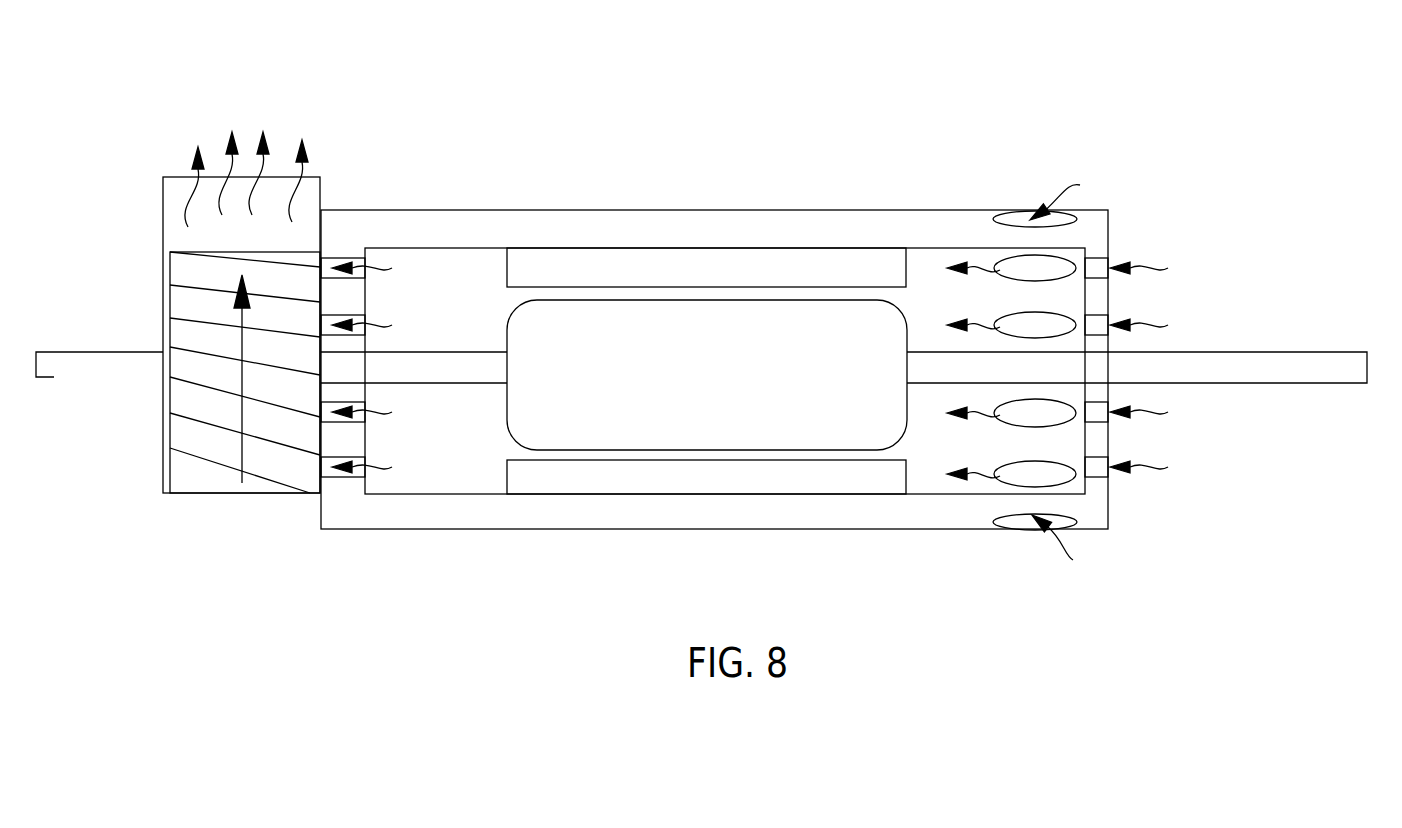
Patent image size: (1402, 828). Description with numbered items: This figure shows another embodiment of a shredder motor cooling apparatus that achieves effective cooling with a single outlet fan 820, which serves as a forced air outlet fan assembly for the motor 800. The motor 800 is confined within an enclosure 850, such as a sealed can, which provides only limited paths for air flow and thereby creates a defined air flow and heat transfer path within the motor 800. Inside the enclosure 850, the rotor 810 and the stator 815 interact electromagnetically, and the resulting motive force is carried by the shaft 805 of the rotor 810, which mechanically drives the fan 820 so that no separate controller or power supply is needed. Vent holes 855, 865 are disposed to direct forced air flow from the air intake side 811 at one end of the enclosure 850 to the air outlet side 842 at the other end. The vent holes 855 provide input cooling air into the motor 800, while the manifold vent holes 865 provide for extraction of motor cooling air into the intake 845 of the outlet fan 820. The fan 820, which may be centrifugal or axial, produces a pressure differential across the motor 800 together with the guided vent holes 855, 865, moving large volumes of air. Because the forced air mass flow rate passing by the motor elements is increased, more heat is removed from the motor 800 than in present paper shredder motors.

The motor 800 is at (695, 163).
The shaft 805 is at (1255, 384).
The rotor 810 is at (850, 395).
The air intake side 811 is at (1140, 230).
The stator 815 is at (850, 492).
The outlet fan 820 is at (132, 300).
The air outlet side 842 is at (320, 188).
The intake 845 is at (313, 494).
The enclosure 850 is at (773, 209).
The vent holes 855 is at (1005, 278).
The manifold vent holes 865 is at (353, 280).